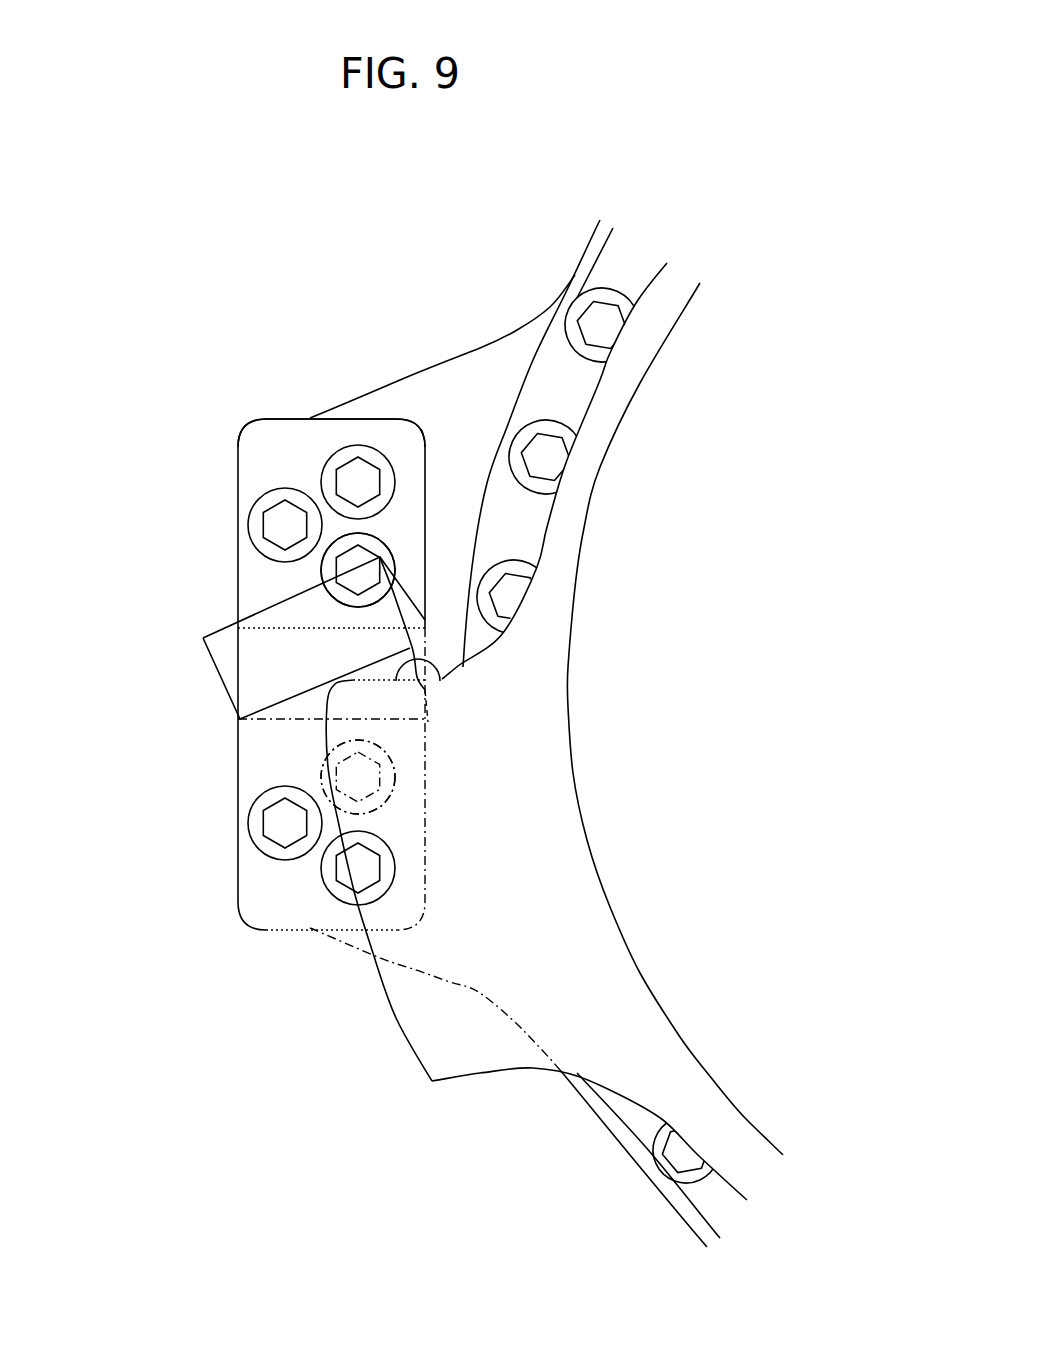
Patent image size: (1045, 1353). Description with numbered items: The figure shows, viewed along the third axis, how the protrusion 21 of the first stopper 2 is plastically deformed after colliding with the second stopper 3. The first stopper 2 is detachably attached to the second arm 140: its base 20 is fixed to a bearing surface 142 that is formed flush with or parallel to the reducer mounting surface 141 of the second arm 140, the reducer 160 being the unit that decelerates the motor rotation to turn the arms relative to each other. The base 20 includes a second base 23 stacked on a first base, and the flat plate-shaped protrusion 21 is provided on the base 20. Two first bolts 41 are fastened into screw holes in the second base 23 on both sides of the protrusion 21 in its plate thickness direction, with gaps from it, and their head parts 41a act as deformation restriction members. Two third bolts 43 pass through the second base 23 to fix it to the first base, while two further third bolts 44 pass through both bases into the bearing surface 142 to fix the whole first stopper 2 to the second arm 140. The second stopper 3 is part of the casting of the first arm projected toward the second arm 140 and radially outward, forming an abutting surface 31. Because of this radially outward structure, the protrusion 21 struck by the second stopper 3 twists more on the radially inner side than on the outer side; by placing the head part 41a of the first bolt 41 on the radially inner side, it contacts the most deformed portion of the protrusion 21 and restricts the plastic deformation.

The first stopper 2 is at (152, 456).
The second stopper 3 is at (430, 1091).
The base 20 is at (230, 556).
The protrusion 21 is at (217, 672).
The second base 23 is at (280, 440).
The abutting surface 31 is at (440, 677).
The first bolt 41 is at (401, 547).
The head part 41a is at (321, 571).
The third bolt 43 is at (254, 490).
The third bolt 44 is at (352, 410).
The second arm 140 is at (472, 339).
The reducer mounting surface 141 is at (587, 243).
The bearing surface 142 is at (357, 937).
The reducer 160 is at (560, 284).